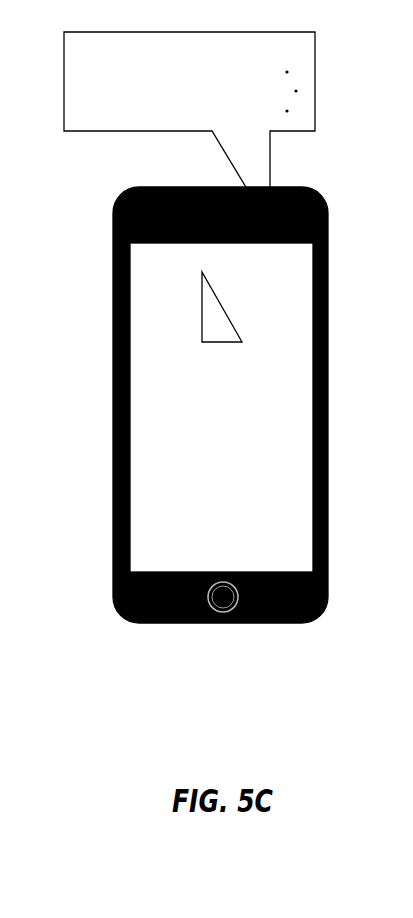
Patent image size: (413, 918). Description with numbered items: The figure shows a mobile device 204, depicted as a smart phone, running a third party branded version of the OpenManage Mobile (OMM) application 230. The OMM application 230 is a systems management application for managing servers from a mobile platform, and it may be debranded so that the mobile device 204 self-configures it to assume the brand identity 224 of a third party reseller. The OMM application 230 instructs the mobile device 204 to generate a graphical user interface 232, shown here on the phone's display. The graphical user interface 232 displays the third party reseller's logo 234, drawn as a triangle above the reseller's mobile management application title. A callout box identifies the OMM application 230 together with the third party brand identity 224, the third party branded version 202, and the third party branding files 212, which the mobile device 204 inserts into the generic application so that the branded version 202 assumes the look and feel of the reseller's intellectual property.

The branded version 202 is at (298, 91).
The mobile device 204 is at (185, 438).
The branding files 212 is at (289, 111).
The brand identity 224 is at (289, 72).
The OpenManage Mobile (OMM) application 230 is at (223, 129).
The graphical user interface 232 is at (178, 407).
The third party reseller's logo 234 is at (187, 320).